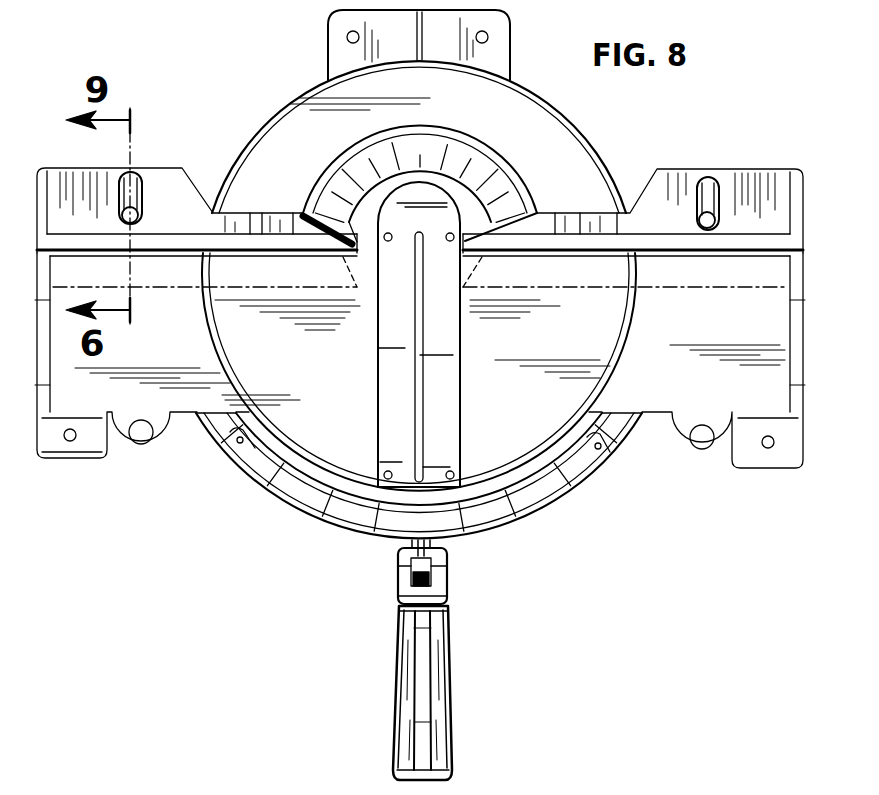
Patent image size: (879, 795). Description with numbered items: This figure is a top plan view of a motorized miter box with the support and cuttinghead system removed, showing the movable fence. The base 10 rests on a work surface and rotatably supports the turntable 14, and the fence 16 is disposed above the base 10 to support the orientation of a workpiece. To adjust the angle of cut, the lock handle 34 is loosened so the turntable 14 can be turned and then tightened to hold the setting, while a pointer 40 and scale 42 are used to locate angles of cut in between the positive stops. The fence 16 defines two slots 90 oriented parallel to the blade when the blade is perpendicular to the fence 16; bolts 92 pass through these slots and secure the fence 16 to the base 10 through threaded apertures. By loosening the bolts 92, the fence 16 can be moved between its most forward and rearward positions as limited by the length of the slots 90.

The base 10 is at (168, 453).
The turntable 14 is at (532, 397).
The fence 16 is at (697, 256).
The lock handle 34 is at (445, 722).
The pointer 40 is at (443, 559).
The scale 42 is at (583, 462).
The slots 90 is at (130, 176).
The bolts 92 is at (140, 222).